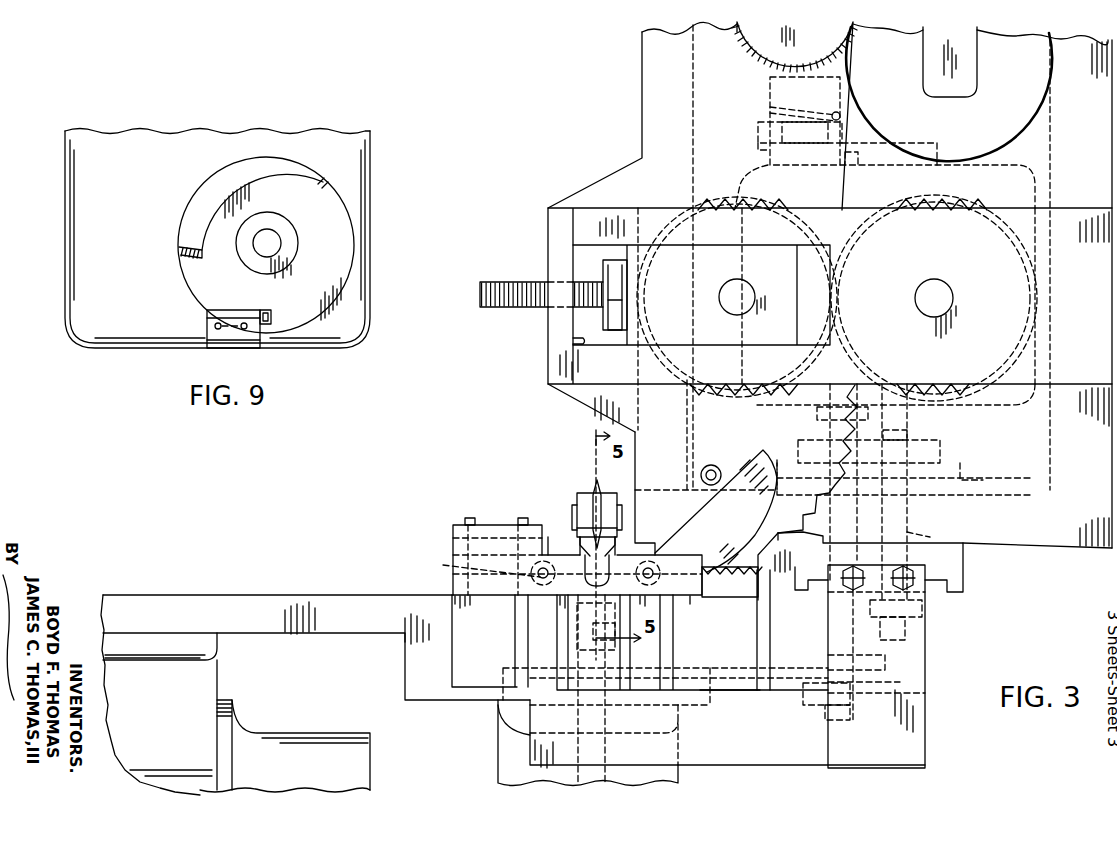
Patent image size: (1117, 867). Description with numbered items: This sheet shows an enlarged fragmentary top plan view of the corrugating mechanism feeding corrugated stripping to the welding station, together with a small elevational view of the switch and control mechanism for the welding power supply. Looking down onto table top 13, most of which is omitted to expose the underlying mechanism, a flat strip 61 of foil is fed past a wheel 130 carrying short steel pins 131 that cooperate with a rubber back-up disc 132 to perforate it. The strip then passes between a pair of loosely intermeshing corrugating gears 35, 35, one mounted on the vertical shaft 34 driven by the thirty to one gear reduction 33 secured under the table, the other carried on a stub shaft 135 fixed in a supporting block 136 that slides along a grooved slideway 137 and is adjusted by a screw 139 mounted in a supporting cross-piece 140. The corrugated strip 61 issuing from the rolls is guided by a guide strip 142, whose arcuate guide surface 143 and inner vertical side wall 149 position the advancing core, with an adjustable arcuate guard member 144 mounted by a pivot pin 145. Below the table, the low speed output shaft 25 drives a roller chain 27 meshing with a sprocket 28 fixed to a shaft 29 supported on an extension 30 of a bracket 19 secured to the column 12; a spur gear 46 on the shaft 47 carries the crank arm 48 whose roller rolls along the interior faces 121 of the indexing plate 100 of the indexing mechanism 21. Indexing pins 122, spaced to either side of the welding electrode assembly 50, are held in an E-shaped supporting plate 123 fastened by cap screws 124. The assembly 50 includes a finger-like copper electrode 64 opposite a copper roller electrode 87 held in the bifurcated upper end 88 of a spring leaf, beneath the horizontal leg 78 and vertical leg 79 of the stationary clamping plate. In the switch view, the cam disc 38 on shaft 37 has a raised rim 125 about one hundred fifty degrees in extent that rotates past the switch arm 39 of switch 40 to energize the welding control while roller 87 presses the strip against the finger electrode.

In FIG. 3, the column 12 is at (680, 780).
In FIG. 3, the table top 13 is at (1102, 168).
In FIG. 3, the bracket 19 is at (263, 620).
In FIG. 3, the indexing mechanism 21 is at (970, 582).
In FIG. 3, the low speed output shaft 25 is at (588, 770).
In FIG. 3, the roller chain 27 is at (925, 697).
In FIG. 3, the sprocket 28 is at (860, 712).
In FIG. 3, the shaft 29 is at (830, 718).
In FIG. 3, the extension 30 is at (765, 657).
In FIG. 9, the gear reduction 33 is at (352, 300).
In FIG. 3, the gear reduction 33 is at (1020, 181).
In FIG. 3, the vertical shaft 34 is at (943, 295).
In FIG. 3, the corrugating gears 35 is at (945, 200).
In FIG. 9, the shaft 37 is at (271, 239).
In FIG. 3, the shaft 37 is at (858, 160).
In FIG. 9, the cam disc 38 is at (355, 232).
In FIG. 3, the cam disc 38 is at (758, 135).
In FIG. 9, the switch arm 39 is at (266, 344).
In FIG. 3, the switch arm 39 is at (778, 117).
In FIG. 9, the switch 40 is at (207, 340).
In FIG. 3, the switch 40 is at (782, 93).
In FIG. 3, the spur gear 46 is at (972, 475).
In FIG. 3, the shaft 47 is at (910, 433).
In FIG. 3, the crank arm 48 is at (925, 608).
In FIG. 3, the welding electrode assembly 50 is at (570, 515).
In FIG. 3, the corrugated strip 61 is at (840, 200).
In FIG. 3, the finger-like copper electrode 64 is at (578, 565).
In FIG. 3, the horizontal leg of stationary clamping plate 78 is at (468, 583).
In FIG. 3, the vertical leg 79 is at (470, 517).
In FIG. 3, the copper roller electrode 87 is at (592, 485).
In FIG. 3, the bifurcated upper end 88 is at (590, 493).
In FIG. 3, the indexing plate 100 is at (968, 565).
In FIG. 3, the interior faces 121 is at (945, 592).
In FIG. 3, the indexing pins 122 is at (453, 567).
In FIG. 3, the E-shaped supporting plate 123 is at (525, 630).
In FIG. 3, the cap screws 124 is at (905, 566).
In FIG. 9, the raised rim 125 is at (182, 246).
In FIG. 3, the wheel 130 is at (838, 34).
In FIG. 3, the steel pins 131 is at (745, 45).
In FIG. 3, the rubber back-up disc 132 is at (1037, 103).
In FIG. 3, the stub shaft 135 is at (728, 290).
In FIG. 3, the supporting block 136 is at (797, 318).
In FIG. 3, the grooved slideway 137 is at (577, 341).
In FIG. 3, the screw 139 is at (493, 282).
In FIG. 3, the supporting cross-piece 140 is at (558, 250).
In FIG. 3, the guide strip 142 is at (748, 498).
In FIG. 3, the arcuate guide surface 143 is at (742, 534).
In FIG. 3, the arcuate guard member 144 is at (688, 512).
In FIG. 3, the pivot pin 145 is at (703, 470).
In FIG. 3, the inner vertical side wall 149 is at (832, 502).